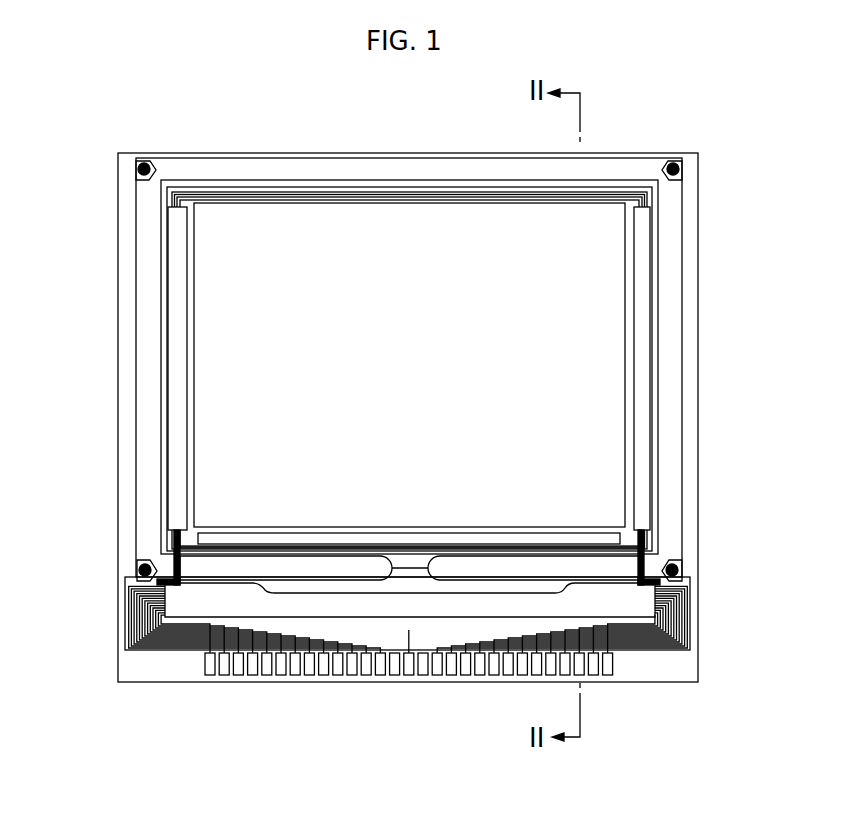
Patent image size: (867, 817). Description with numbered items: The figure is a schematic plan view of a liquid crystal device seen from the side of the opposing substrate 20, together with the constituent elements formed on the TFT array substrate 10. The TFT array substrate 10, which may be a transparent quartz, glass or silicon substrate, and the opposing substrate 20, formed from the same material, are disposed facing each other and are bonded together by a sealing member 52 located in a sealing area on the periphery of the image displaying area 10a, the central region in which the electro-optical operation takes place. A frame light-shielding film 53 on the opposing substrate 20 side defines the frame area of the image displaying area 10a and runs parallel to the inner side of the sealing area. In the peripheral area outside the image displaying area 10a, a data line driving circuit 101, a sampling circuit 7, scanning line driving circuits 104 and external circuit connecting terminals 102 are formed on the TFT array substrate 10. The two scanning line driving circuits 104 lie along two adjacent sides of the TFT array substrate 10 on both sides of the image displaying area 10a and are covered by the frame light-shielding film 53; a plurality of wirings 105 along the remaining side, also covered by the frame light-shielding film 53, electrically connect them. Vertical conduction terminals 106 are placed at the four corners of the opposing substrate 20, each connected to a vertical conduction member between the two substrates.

The TFT array substrate 10 is at (238, 157).
The image displaying area 10a is at (230, 323).
The opposing substrate 20 is at (430, 157).
The sealing member 52 is at (672, 303).
The frame light-shielding film 53 is at (645, 543).
The scanning line driving circuit 104 is at (643, 370).
The wiring 105 is at (338, 196).
The vertical conduction terminal 106 is at (152, 166).
The data line driving circuit 101 is at (188, 606).
The external circuit connecting terminal 102 is at (378, 665).
The sampling circuit 7 is at (278, 537).